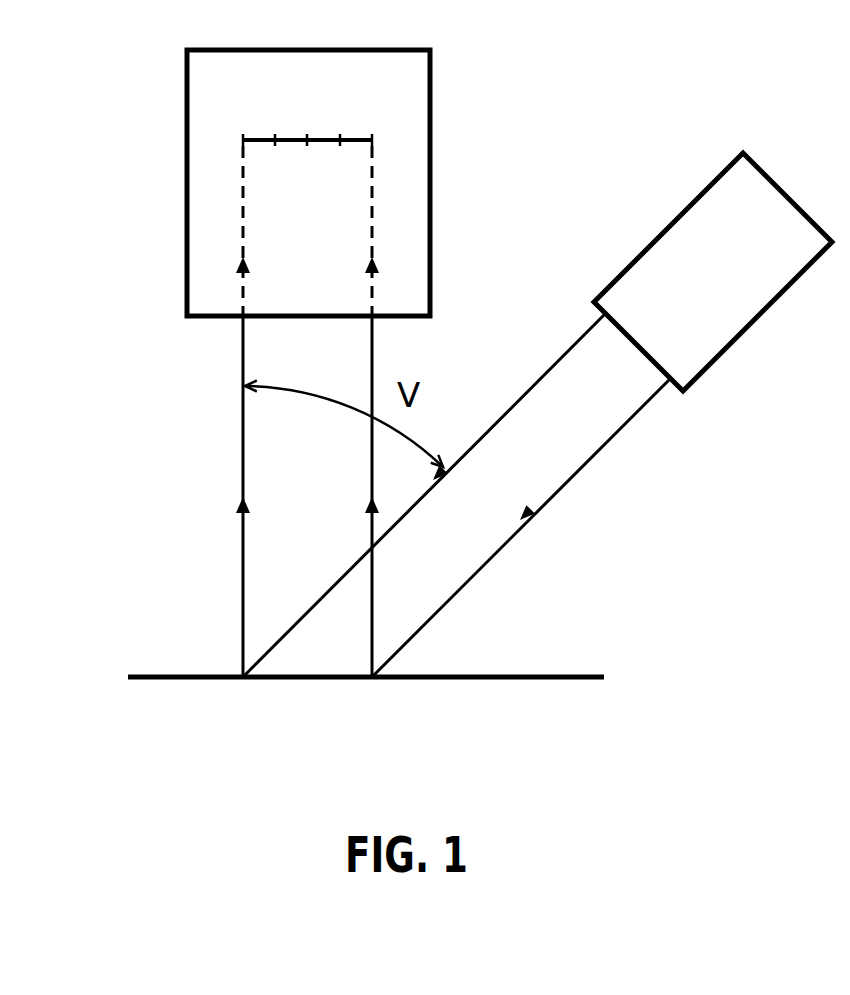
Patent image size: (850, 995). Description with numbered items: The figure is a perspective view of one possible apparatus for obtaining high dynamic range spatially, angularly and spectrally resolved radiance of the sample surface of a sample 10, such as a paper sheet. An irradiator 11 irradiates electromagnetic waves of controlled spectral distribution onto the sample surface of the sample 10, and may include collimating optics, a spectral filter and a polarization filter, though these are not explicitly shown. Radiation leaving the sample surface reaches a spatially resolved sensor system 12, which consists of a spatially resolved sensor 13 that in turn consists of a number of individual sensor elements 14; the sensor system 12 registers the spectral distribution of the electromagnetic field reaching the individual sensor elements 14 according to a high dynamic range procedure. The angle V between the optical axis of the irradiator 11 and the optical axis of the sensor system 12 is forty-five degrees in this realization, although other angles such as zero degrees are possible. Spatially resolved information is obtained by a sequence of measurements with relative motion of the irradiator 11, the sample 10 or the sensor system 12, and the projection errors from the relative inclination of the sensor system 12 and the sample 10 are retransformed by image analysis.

The sample 10 is at (225, 667).
The irradiator 11 is at (745, 358).
The spatially resolved sensor system 12 is at (162, 190).
The spatially resolved sensor 13 is at (385, 112).
The individual sensor elements 14 is at (258, 125).